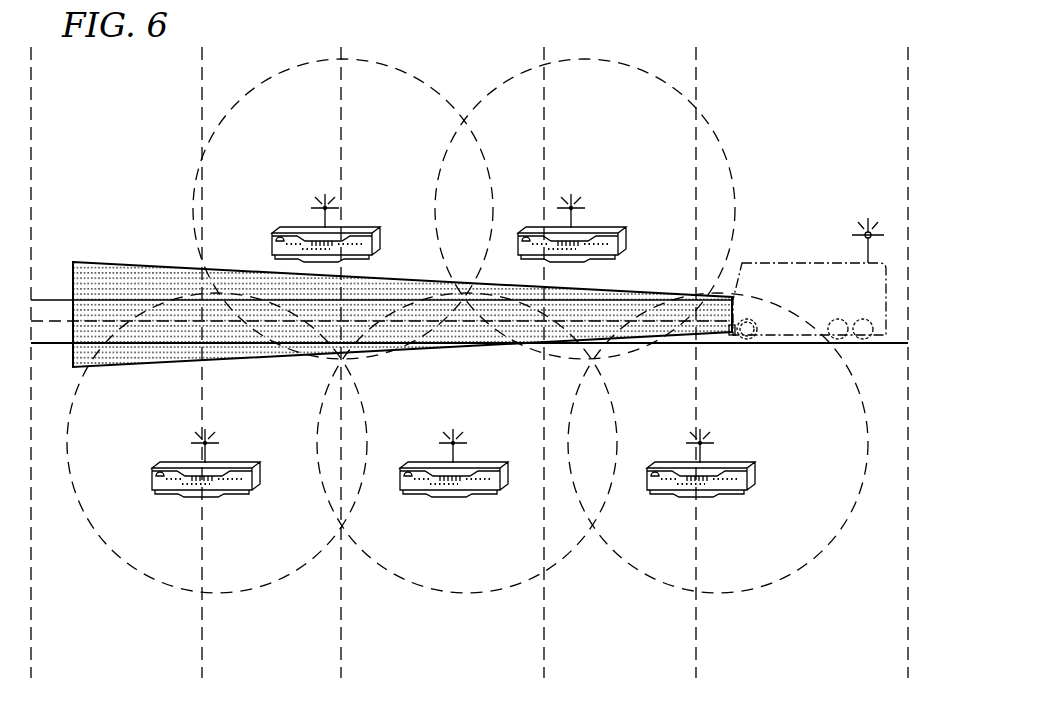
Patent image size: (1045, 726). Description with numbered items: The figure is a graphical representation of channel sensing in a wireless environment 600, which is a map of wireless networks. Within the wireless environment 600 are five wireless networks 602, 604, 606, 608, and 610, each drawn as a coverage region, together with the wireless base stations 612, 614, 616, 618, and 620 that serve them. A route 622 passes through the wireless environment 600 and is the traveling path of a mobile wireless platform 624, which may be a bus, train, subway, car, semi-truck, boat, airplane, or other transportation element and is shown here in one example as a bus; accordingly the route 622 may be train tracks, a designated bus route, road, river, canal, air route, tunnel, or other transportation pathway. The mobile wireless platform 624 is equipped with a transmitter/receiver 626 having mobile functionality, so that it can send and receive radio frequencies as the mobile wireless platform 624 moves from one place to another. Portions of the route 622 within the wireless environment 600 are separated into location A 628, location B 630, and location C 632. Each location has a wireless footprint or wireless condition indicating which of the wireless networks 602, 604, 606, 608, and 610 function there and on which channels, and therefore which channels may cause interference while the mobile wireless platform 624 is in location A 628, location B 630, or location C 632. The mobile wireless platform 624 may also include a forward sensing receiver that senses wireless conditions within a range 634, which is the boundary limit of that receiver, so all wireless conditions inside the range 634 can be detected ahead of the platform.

The wireless environment 600 is at (447, 70).
The wireless network 602 is at (278, 128).
The wireless network 604 is at (568, 128).
The wireless network 606 is at (224, 555).
The wireless network 608 is at (448, 555).
The wireless network 610 is at (716, 555).
The wireless base station 612 is at (362, 228).
The wireless base station 614 is at (611, 228).
The wireless base station 616 is at (241, 463).
The wireless base station 618 is at (491, 463).
The wireless base station 620 is at (739, 463).
The route 622 is at (60, 299).
The mobile wireless platform 624 is at (787, 263).
The transmitter/receiver 626 is at (864, 254).
The location A 628 is at (96, 667).
The location B 630 is at (429, 667).
The location C 632 is at (781, 667).
The range 634 is at (129, 262).